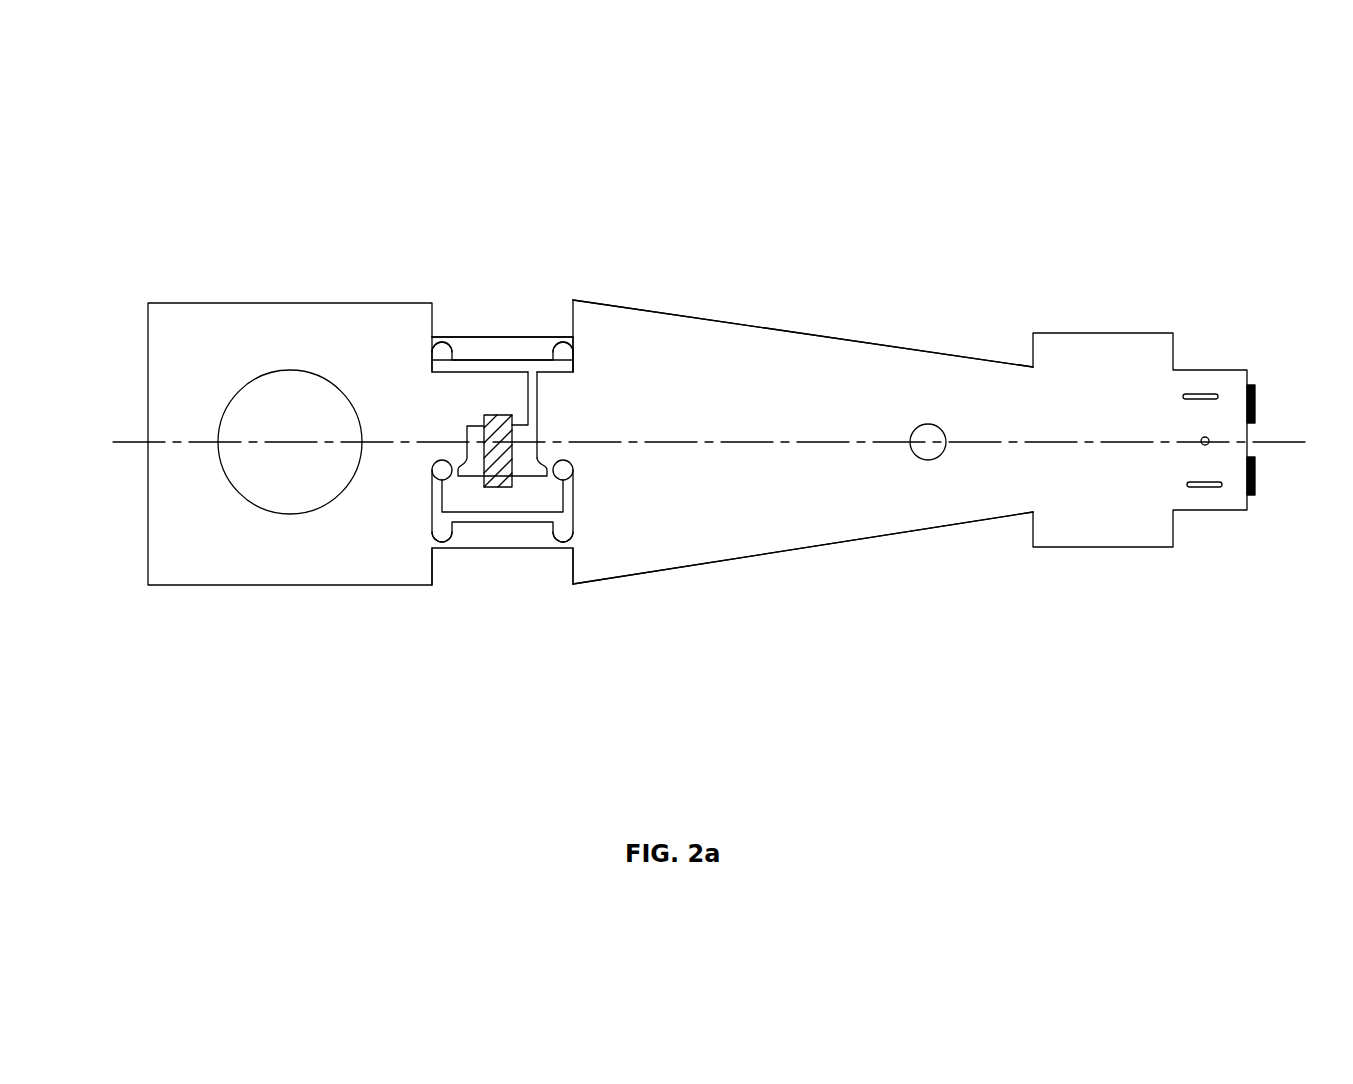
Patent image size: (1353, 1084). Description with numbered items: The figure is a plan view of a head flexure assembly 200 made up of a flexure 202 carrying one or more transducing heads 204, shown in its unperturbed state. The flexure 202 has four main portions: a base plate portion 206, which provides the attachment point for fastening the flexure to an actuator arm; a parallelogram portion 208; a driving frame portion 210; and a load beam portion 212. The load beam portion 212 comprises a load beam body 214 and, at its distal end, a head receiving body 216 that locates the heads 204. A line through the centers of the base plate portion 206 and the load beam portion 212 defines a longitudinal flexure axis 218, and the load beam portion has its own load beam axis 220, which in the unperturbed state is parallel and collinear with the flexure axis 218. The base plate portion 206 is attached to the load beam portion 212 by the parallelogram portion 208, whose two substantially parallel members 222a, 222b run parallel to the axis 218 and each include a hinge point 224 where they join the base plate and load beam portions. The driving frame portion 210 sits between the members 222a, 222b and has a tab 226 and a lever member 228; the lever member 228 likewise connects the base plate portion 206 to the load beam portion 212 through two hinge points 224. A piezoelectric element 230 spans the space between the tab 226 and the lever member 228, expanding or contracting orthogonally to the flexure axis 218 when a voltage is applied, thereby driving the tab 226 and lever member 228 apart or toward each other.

The head flexure assembly 200 is at (1006, 155).
The flexure 202 is at (148, 303).
The transducing heads 204 is at (1250, 385).
The base plate portion 206 is at (308, 303).
The parallelogram portion 208 is at (483, 337).
The driving frame portion 210 is at (535, 372).
The load beam portion 212 is at (820, 336).
The load beam body 214 is at (898, 533).
The head receiving body 216 is at (1175, 513).
The longitudinal flexure axis 218 is at (133, 443).
The load beam axis 220 is at (1103, 443).
The parallel member 222a is at (500, 337).
The parallel member 222b is at (477, 548).
The hinge point 224 is at (435, 340).
The tab 226 is at (483, 372).
The lever member 228 is at (537, 512).
The piezoelectric element 230 is at (512, 450).